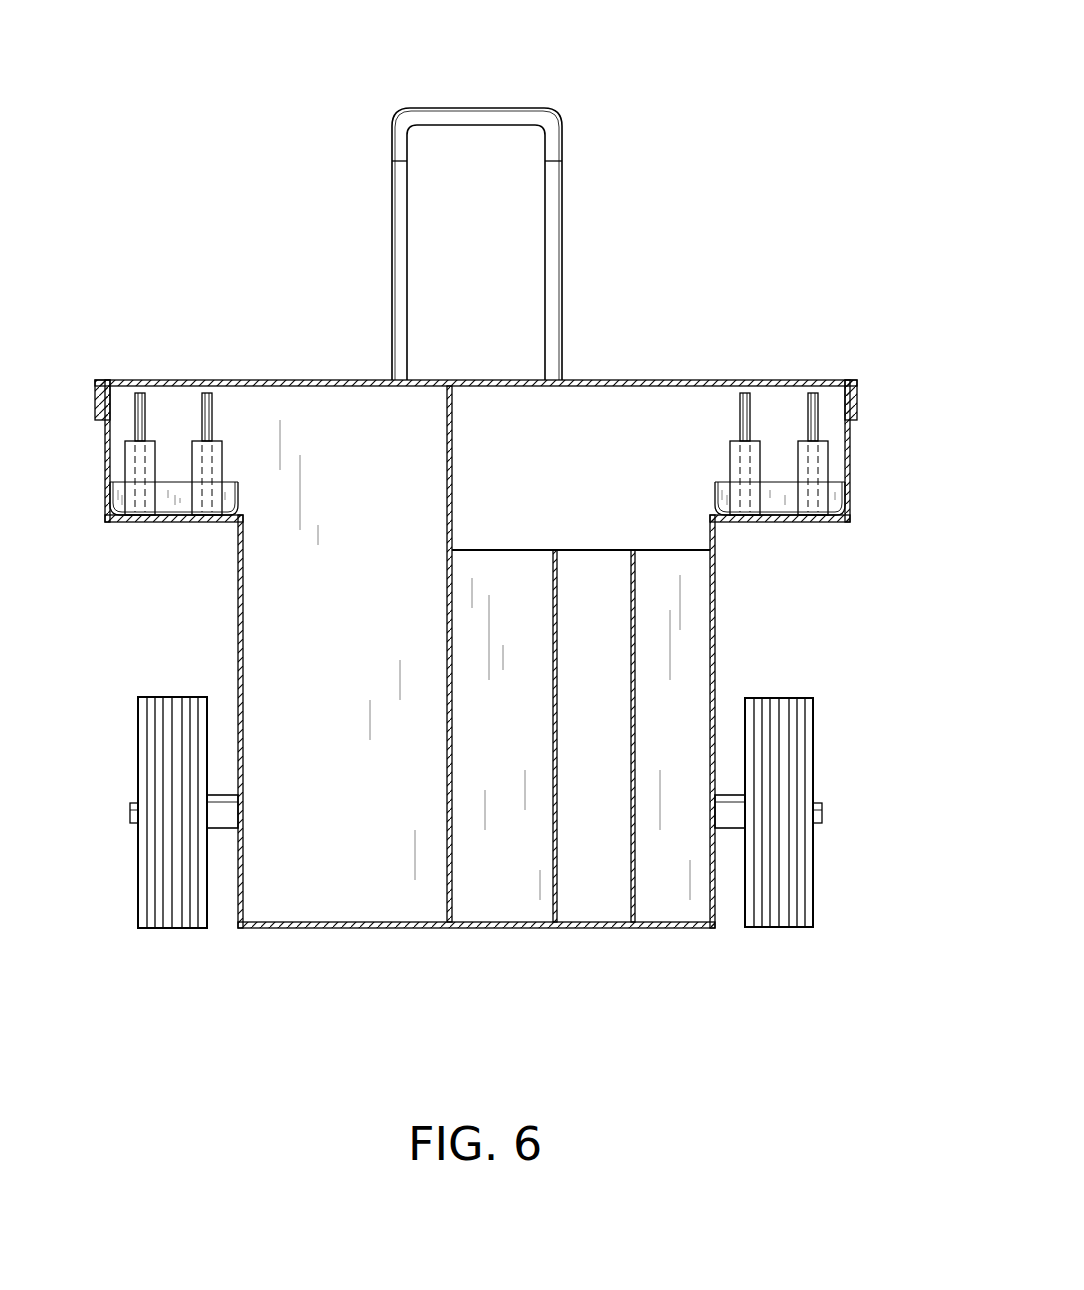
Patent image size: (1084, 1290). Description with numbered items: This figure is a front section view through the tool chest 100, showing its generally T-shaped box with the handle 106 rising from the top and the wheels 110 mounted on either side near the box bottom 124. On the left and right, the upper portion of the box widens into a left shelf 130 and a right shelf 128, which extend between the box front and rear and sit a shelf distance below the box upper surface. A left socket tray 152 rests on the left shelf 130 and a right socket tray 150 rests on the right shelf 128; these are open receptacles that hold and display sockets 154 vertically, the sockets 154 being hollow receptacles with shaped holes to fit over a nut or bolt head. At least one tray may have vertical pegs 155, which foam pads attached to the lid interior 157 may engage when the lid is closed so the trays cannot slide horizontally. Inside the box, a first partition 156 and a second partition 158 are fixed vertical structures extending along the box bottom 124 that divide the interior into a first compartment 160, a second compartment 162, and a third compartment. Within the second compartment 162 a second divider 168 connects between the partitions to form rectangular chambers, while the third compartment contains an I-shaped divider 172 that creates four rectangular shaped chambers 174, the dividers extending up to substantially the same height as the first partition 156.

The tool chest 100 is at (710, 685).
The handle 106 is at (452, 110).
The wheels 110 is at (805, 913).
The box bottom 124 is at (290, 930).
The right shelf 128 is at (769, 521).
The left shelf 130 is at (120, 522).
The right socket tray 150 is at (713, 510).
The left socket tray 152 is at (237, 490).
The sockets 154 is at (817, 492).
The vertical pegs 155 is at (813, 405).
The first partition 156 is at (552, 910).
The lid interior 157 is at (346, 415).
The second partition 158 is at (448, 890).
The first compartment 160 is at (258, 905).
The second compartment 162 is at (496, 910).
The second divider 168 is at (513, 550).
The I-shaped divider 172 is at (668, 550).
The rectangular shaped chambers 174 is at (595, 915).